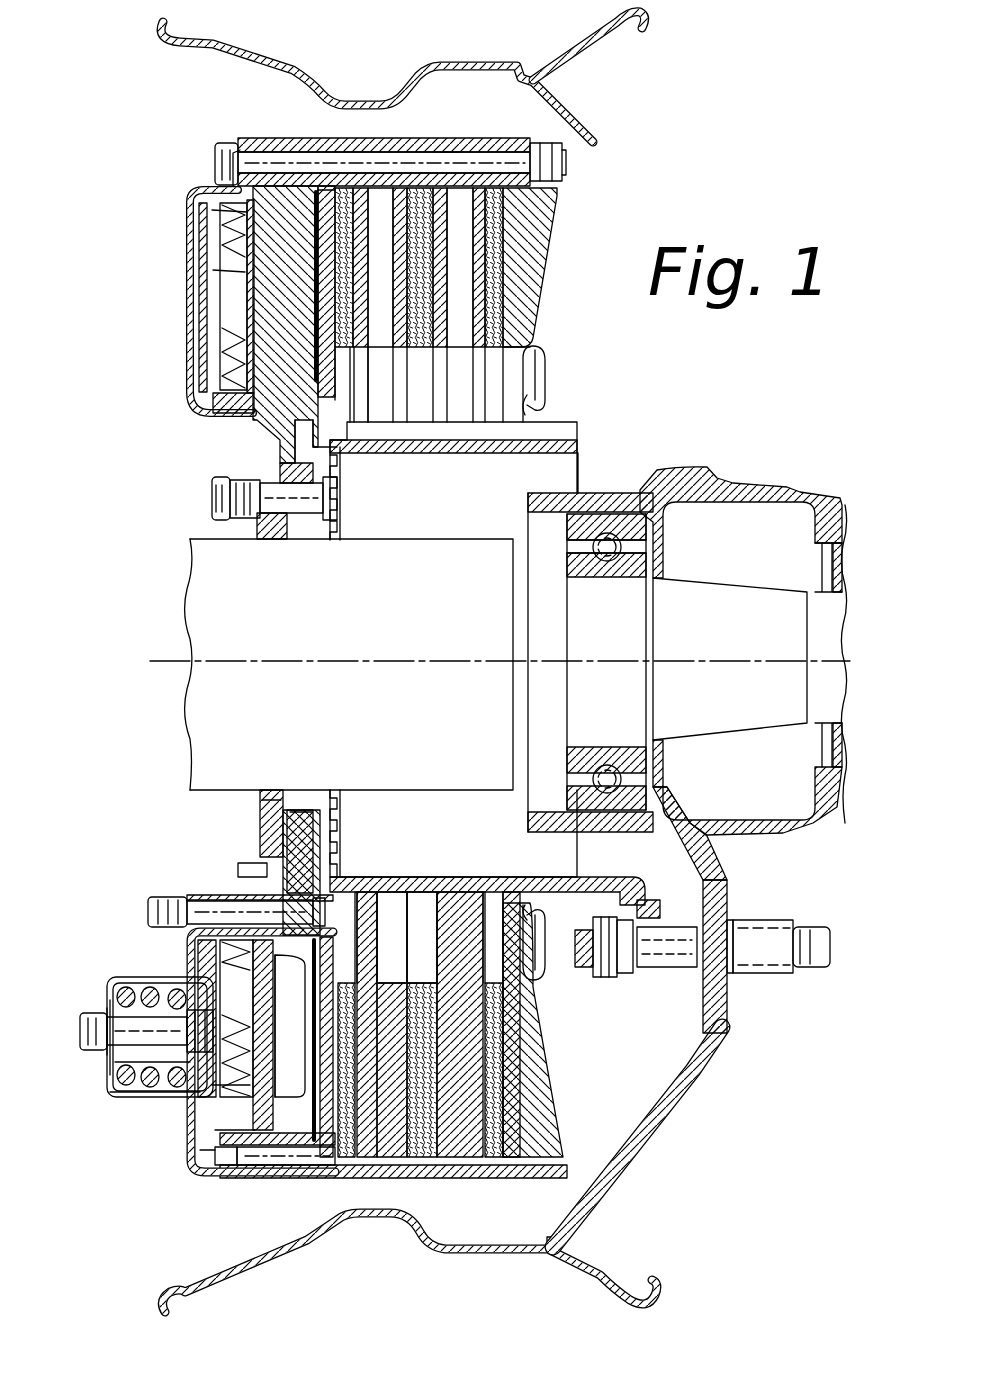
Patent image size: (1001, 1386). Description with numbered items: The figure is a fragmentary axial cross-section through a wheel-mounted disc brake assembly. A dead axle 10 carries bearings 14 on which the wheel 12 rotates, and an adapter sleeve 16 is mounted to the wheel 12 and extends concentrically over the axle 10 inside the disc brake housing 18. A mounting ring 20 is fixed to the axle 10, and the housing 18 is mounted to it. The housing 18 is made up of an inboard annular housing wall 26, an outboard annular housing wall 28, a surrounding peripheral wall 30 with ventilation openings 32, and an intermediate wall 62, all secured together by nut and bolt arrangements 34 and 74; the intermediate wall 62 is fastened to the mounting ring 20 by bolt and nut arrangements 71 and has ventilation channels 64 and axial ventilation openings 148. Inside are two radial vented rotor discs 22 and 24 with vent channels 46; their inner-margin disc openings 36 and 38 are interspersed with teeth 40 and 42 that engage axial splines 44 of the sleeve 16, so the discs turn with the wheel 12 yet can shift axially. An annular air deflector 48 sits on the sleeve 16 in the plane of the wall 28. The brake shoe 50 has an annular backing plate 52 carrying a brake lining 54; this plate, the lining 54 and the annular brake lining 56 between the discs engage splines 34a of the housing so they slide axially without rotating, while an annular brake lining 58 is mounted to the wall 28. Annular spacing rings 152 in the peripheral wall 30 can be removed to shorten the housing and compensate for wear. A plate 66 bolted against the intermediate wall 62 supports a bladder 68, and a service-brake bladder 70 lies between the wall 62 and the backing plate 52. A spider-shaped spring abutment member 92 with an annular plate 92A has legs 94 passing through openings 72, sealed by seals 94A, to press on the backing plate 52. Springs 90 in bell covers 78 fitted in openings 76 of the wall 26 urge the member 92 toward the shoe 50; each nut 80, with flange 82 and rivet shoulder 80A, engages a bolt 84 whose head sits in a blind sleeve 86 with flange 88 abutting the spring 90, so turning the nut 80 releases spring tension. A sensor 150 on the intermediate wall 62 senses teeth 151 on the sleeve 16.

The axle 10 is at (182, 708).
The wheel 12 is at (526, 40).
The bearings 14 is at (603, 520).
The adapter sleeve 16 is at (590, 440).
The disc brake housing 18 is at (425, 135).
The mounting ring 20 is at (257, 522).
The rotor disc 22 is at (360, 195).
The rotor disc 24 is at (480, 195).
The annular housing wall 26 is at (198, 280).
The annular housing wall 28 is at (556, 240).
The peripheral wall 30 is at (395, 137).
The ventilation openings 32 is at (440, 1157).
The nut and bolt arrangements 34 is at (282, 190).
The splines 34a is at (452, 150).
The disc openings 36 is at (400, 422).
The disc openings 38 is at (490, 422).
The teeth 40 is at (380, 422).
The teeth 42 is at (500, 422).
The axial splines 44 is at (470, 422).
The vent channels 46 is at (528, 272).
The annular air deflector 48 is at (545, 362).
The brake shoe 50 is at (316, 190).
The annular backing plate 52 is at (325, 255).
The brake lining 54 is at (352, 422).
The annular brake lining 56 is at (440, 422).
The annular brake lining 58 is at (545, 385).
The intermediate wall 62 is at (262, 190).
The ventilation channels 64 is at (215, 385).
The plate 66 is at (245, 150).
The bladder 68 is at (212, 210).
The bladder 70 is at (325, 190).
The bolt and nut arrangements 71 is at (212, 497).
The openings 72 is at (290, 1180).
The nut and bolt arrangements 74 is at (230, 912).
The opening 76 is at (185, 978).
The bell cover 78 is at (110, 1093).
The nut 80 is at (80, 1030).
The rivet shoulder 80A is at (107, 1022).
The flange 82 is at (108, 1020).
The bolt 84 is at (140, 1035).
The blind sleeve 86 is at (168, 990).
The flange 88 is at (258, 1035).
The springs 90 is at (137, 1060).
The spring abutment member 92 is at (215, 320).
The annular plate 92A is at (213, 272).
The legs 94 is at (208, 1178).
The seals 94A is at (258, 1180).
The axial ventilation openings 148 is at (230, 480).
The antilock-brake sensor 150 is at (270, 858).
The teeth 151 is at (327, 810).
The annular spacing rings 152 is at (343, 195).